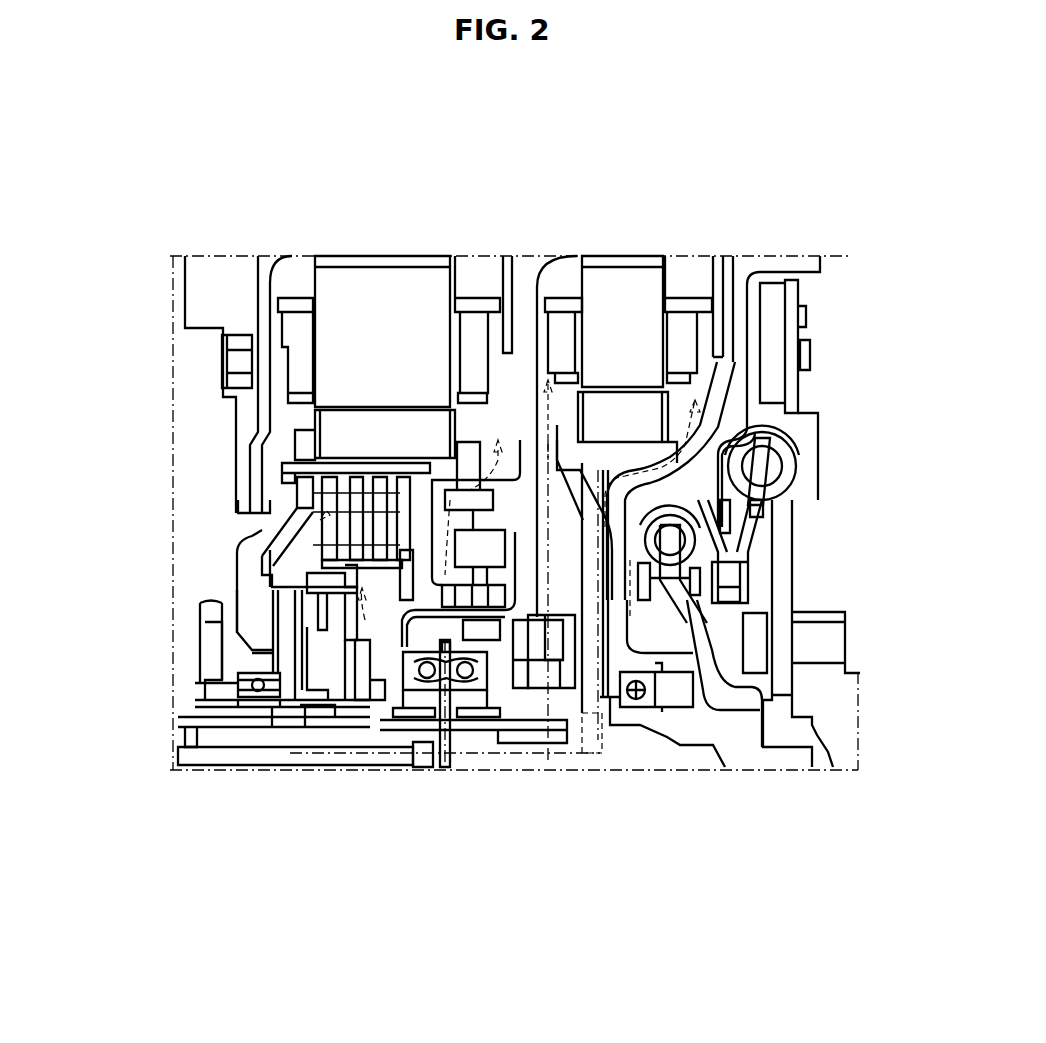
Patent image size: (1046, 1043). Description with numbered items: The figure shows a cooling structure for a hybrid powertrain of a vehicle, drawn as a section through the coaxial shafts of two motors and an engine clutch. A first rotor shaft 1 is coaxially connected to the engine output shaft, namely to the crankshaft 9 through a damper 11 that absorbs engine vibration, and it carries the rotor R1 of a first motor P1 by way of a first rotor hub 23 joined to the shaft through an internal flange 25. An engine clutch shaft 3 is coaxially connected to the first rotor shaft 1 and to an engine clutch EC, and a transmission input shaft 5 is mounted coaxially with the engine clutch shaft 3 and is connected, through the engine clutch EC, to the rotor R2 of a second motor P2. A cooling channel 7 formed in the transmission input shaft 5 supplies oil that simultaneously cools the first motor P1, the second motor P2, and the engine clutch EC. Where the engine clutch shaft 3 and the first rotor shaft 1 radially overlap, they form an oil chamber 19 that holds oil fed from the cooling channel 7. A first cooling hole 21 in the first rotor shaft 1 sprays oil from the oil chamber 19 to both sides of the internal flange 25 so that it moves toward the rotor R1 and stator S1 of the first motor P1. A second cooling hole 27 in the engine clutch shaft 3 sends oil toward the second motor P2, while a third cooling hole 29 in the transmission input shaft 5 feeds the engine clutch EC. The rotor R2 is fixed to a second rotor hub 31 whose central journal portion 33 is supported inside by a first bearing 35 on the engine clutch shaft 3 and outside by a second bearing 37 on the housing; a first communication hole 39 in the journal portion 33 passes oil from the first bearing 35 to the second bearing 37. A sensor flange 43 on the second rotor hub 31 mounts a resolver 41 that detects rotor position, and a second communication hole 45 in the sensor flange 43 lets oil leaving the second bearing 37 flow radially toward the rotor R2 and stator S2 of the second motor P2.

The first rotor shaft 1 is at (735, 735).
The engine clutch shaft 3 is at (512, 720).
The transmission input shaft 5 is at (225, 735).
The cooling channel 7 is at (260, 755).
The crankshaft 9 is at (832, 697).
The damper 11 is at (700, 543).
The oil chamber 19 is at (668, 753).
The first cooling hole 21 is at (600, 735).
The first rotor hub 23 is at (610, 455).
The internal flange 25 is at (700, 578).
The second cooling hole 27 is at (447, 700).
The third cooling hole 29 is at (375, 720).
The second rotor hub 31 is at (478, 450).
The journal portion 33 is at (477, 697).
The first bearing 35 is at (400, 722).
The second bearing 37 is at (345, 663).
The first communication hole 39 is at (422, 745).
The resolver 41 is at (470, 572).
The sensor flange 43 is at (463, 600).
The second communication hole 45 is at (335, 595).
The stator of the first motor S1 is at (600, 295).
The first motor P1 is at (632, 292).
The rotor of the first motor R1 is at (640, 435).
The stator of the second motor S2 is at (330, 295).
The second motor P2 is at (383, 292).
The rotor of the second motor R2 is at (355, 425).
The engine clutch EC is at (330, 515).